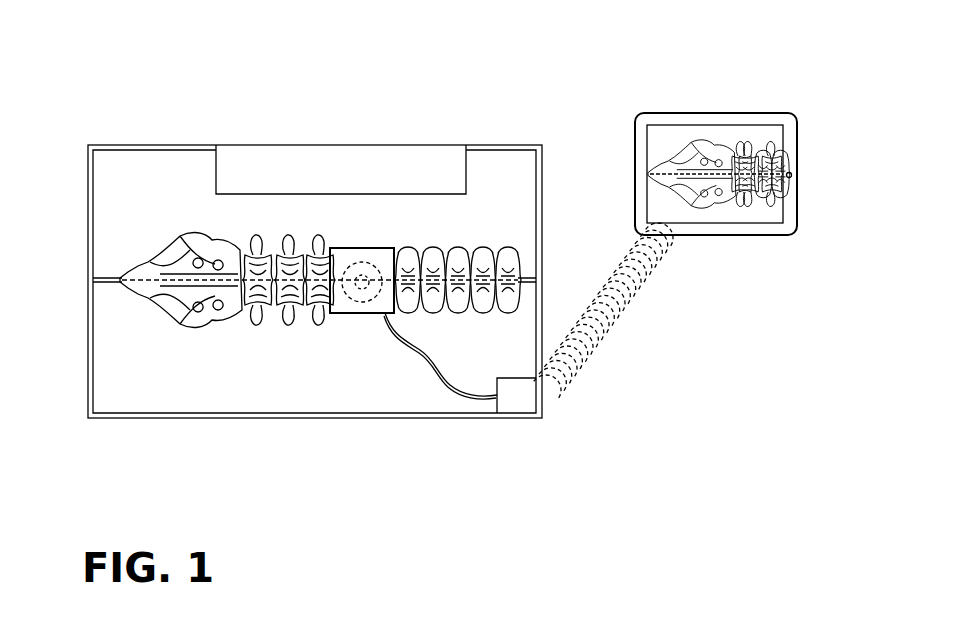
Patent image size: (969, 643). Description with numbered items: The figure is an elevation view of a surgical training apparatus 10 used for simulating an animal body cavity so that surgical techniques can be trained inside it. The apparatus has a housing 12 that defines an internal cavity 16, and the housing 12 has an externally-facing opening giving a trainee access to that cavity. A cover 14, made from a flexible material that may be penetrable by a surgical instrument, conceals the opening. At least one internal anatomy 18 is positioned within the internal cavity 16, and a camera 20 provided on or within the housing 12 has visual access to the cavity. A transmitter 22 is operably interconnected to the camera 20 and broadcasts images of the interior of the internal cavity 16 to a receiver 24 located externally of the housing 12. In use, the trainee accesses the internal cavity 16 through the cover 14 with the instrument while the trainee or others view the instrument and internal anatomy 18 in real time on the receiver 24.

The surgical training apparatus 10 is at (224, 90).
The housing 12 is at (88, 165).
The cover 14 is at (295, 143).
The internal cavity 16 is at (295, 379).
The internal anatomy 18 is at (203, 322).
The camera 20 is at (357, 313).
The transmitter 22 is at (492, 402).
The receiver 24 is at (660, 113).